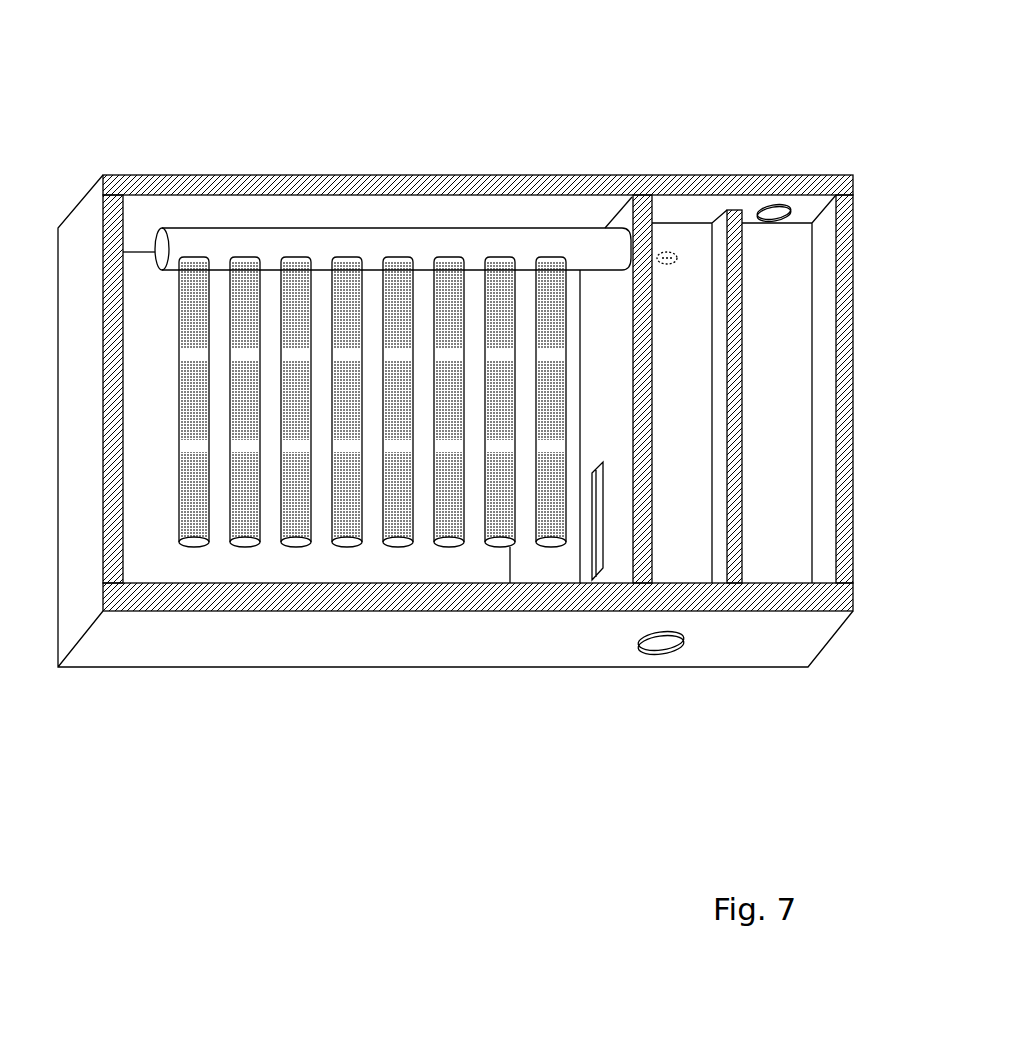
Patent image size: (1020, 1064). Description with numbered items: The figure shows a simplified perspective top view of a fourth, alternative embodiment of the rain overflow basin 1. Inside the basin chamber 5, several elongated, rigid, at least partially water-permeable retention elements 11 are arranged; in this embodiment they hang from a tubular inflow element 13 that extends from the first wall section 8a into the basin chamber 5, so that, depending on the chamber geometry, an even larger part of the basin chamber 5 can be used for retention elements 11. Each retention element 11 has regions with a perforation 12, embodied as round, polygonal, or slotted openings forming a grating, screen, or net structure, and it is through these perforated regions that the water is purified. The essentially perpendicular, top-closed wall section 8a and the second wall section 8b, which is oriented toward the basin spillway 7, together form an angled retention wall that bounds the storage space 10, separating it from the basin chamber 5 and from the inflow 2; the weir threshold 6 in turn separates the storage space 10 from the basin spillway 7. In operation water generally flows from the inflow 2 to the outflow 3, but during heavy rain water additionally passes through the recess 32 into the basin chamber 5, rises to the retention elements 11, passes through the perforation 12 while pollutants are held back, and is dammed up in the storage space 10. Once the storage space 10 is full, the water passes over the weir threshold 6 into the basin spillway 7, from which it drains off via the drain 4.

The rain overflow basin 1 is at (444, 49).
The inflow 2 is at (641, 652).
The outflow 3 is at (665, 252).
The drain 4 is at (785, 203).
The basin chamber 5 is at (151, 562).
The weir threshold 6 is at (735, 213).
The basin spillway 7 is at (775, 558).
The first wall section 8a is at (621, 220).
The second wall section 8b is at (685, 547).
The storage space 10 is at (698, 238).
The retention element 11 is at (200, 254).
The perforation 12 is at (191, 284).
The tubular inflow element 13 is at (371, 240).
The recess 32 is at (595, 563).